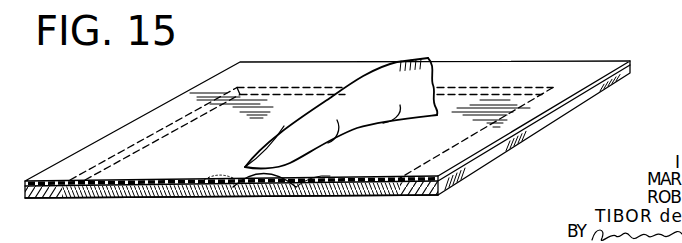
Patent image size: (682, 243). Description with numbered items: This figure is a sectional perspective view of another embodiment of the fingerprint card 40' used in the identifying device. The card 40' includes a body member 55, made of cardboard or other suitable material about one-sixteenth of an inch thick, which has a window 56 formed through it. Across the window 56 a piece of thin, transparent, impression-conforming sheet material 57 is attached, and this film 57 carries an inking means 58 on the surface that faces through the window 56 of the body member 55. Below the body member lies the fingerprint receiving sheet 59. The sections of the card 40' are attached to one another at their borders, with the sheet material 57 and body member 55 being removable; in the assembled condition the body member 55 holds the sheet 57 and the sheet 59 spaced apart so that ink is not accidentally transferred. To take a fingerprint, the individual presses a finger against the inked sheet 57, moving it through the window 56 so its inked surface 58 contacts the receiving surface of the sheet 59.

The fingerprint card 40' is at (351, 107).
The body member 55 is at (549, 116).
The window 56 is at (137, 147).
The transparent sheet material 57 is at (527, 74).
The inking means 58 is at (175, 186).
The sheet 59 is at (116, 201).